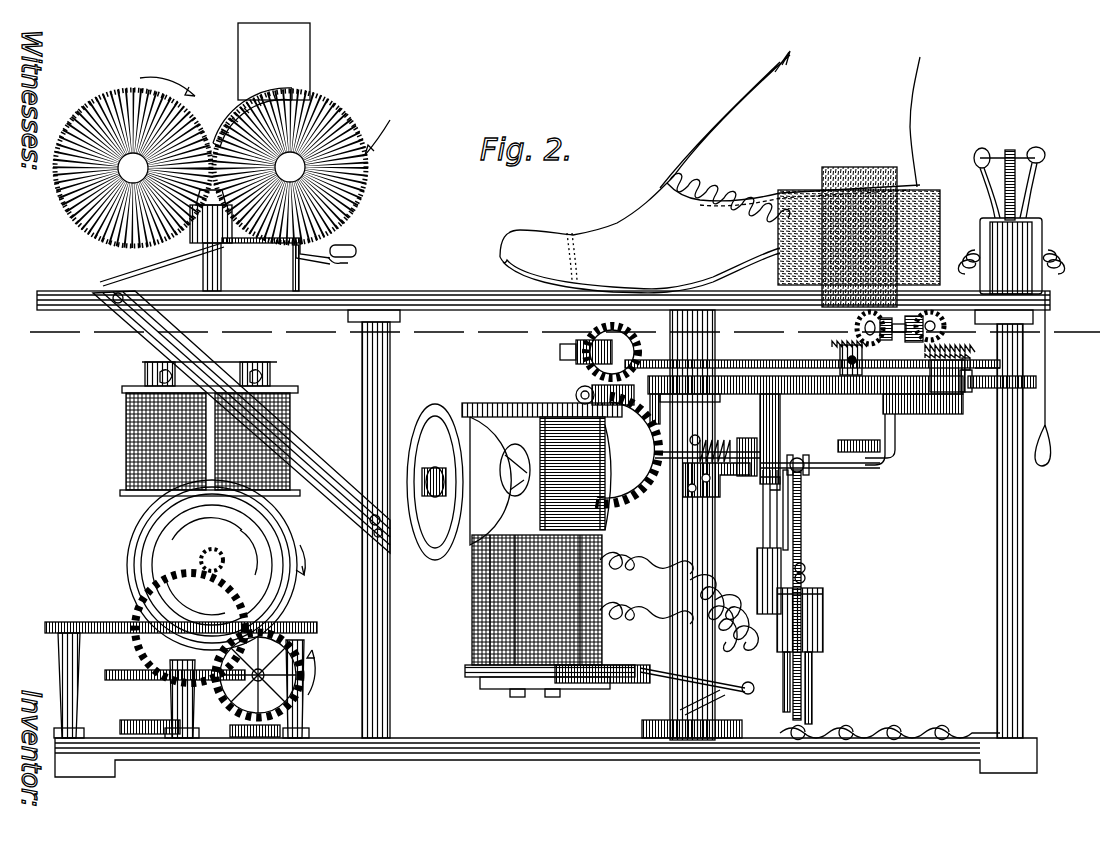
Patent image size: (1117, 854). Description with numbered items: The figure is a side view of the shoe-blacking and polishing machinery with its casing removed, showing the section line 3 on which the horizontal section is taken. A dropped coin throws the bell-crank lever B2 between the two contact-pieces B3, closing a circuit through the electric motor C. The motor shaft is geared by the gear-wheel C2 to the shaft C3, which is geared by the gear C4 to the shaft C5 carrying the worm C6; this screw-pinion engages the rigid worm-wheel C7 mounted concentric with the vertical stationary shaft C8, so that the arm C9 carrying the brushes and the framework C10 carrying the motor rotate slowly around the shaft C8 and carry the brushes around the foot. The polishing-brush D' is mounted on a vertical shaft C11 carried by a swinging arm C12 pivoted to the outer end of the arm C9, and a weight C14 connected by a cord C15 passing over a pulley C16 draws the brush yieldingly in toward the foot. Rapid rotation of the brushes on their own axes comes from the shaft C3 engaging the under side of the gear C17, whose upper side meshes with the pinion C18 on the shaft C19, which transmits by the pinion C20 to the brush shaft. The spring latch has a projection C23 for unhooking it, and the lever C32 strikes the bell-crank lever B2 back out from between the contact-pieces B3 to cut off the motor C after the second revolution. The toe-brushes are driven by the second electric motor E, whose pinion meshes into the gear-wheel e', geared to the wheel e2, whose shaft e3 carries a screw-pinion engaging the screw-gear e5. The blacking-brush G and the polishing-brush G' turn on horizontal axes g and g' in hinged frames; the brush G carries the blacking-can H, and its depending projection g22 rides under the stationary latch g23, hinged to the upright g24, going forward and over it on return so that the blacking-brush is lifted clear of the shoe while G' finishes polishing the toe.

The section line 3 3 is at (562, 331).
The second electric motor E is at (194, 429).
The gear-wheel e' is at (171, 628).
The wheel e2 is at (318, 667).
The shaft e3 is at (258, 675).
The screw-gear e5 is at (128, 678).
The electric motor C is at (548, 550).
The fly wheel C'' is at (425, 482).
The gear-wheel C2 is at (630, 340).
The shaft C3 is at (812, 352).
The gear C4 is at (650, 508).
The shaft C5 is at (700, 438).
The worm C6 is at (707, 448).
The worm-wheel C7 is at (679, 597).
The vertical stationary shaft C8 is at (690, 326).
The arm C9 is at (782, 378).
The framework C10 is at (654, 690).
The vertical brush shaft C11 is at (878, 315).
The swinging arm C12 is at (920, 388).
The weight C14 is at (823, 600).
The cord C15 is at (805, 525).
The pulley C16 is at (805, 460).
The gear C17 is at (954, 339).
The pinion C18 is at (938, 318).
The shaft C19 is at (905, 320).
The pinion C20 is at (862, 330).
The projection C23 is at (1035, 382).
The lever C32 is at (1046, 360).
The blacking-brush G is at (302, 161).
The polishing-brush G' is at (133, 160).
The horizontal axis g is at (290, 167).
The horizontal axis g' is at (133, 168).
The depending projection g22 is at (345, 264).
The stationary latch g23 is at (256, 245).
The upright g24 is at (292, 273).
The blacking-can H is at (261, 85).
The polishing-brush D' is at (875, 237).
The bell-crank lever B2 is at (1012, 160).
The contact-pieces B3 is at (978, 160).